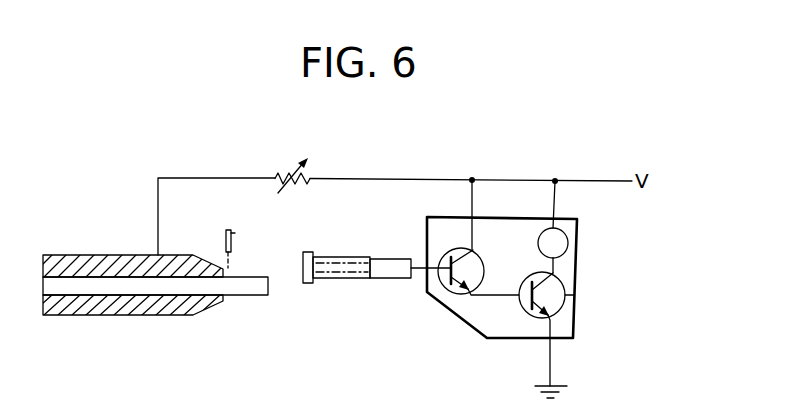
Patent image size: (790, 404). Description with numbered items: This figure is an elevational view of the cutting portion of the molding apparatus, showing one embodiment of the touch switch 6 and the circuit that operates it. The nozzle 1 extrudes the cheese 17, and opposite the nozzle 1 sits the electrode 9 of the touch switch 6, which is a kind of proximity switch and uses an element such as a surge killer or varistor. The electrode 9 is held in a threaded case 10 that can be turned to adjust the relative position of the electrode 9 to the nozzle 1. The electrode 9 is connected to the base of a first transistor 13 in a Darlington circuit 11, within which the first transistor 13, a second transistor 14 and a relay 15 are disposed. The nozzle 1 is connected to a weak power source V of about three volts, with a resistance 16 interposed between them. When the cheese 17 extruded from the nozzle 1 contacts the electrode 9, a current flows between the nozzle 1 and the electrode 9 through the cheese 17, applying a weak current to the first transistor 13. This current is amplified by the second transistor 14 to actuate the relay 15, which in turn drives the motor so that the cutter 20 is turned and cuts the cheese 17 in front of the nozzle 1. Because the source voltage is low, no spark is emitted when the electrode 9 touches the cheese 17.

The nozzle 1 is at (116, 306).
The cheese 17 is at (244, 294).
The cutter 20 is at (233, 237).
The resistance 16 is at (280, 172).
The touch switch 6 is at (354, 261).
The electrode 9 is at (307, 284).
The case 10 is at (357, 283).
The Darlington circuit 11 is at (544, 285).
The first transistor 13 is at (449, 292).
The second transistor 14 is at (574, 296).
The relay 15 is at (538, 243).